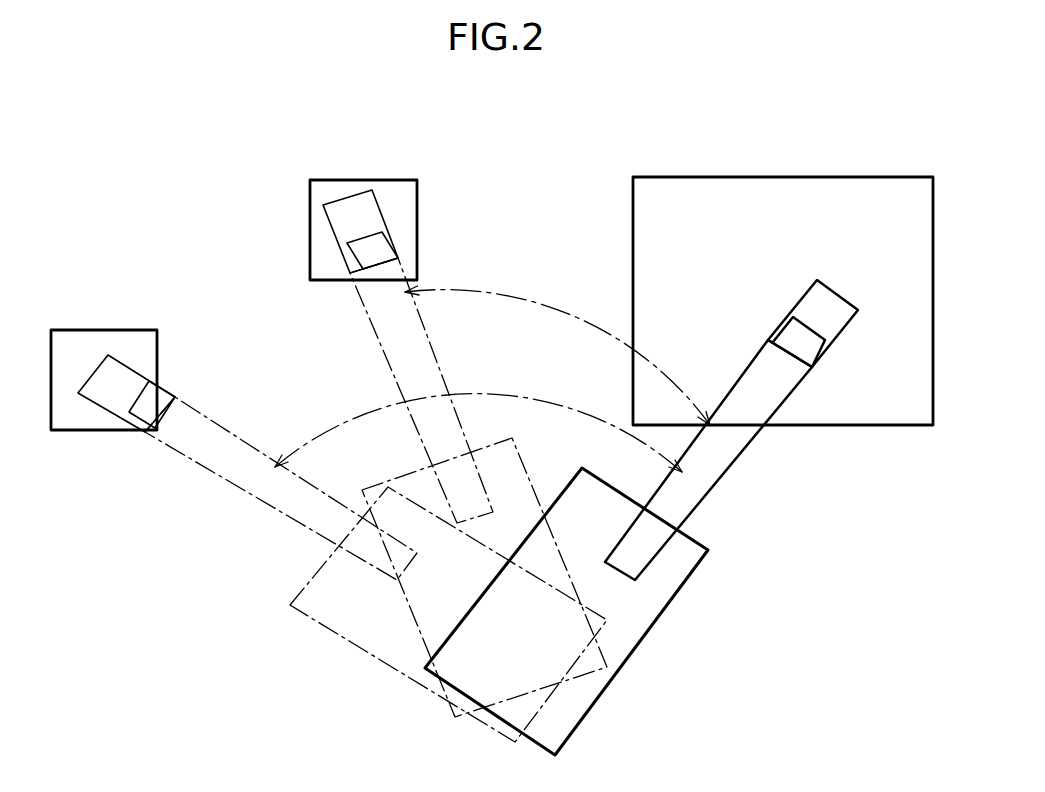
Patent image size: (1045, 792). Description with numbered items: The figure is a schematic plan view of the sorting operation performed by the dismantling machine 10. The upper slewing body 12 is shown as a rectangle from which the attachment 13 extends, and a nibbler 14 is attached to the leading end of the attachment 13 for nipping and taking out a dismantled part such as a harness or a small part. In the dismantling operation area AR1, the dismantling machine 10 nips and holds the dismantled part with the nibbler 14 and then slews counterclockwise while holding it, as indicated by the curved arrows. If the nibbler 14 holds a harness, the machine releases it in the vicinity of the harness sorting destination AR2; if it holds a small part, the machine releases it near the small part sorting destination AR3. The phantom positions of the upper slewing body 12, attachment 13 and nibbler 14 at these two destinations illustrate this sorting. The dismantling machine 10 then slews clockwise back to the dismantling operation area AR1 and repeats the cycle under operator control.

The dismantling machine 10 is at (476, 472).
The upper slewing body 12 is at (652, 637).
The attachment 13 is at (728, 468).
The nibbler 14 is at (840, 323).
The dismantling operation area AR1 is at (845, 177).
The harness sorting destination AR2 is at (158, 347).
The small part sorting destination AR3 is at (417, 194).